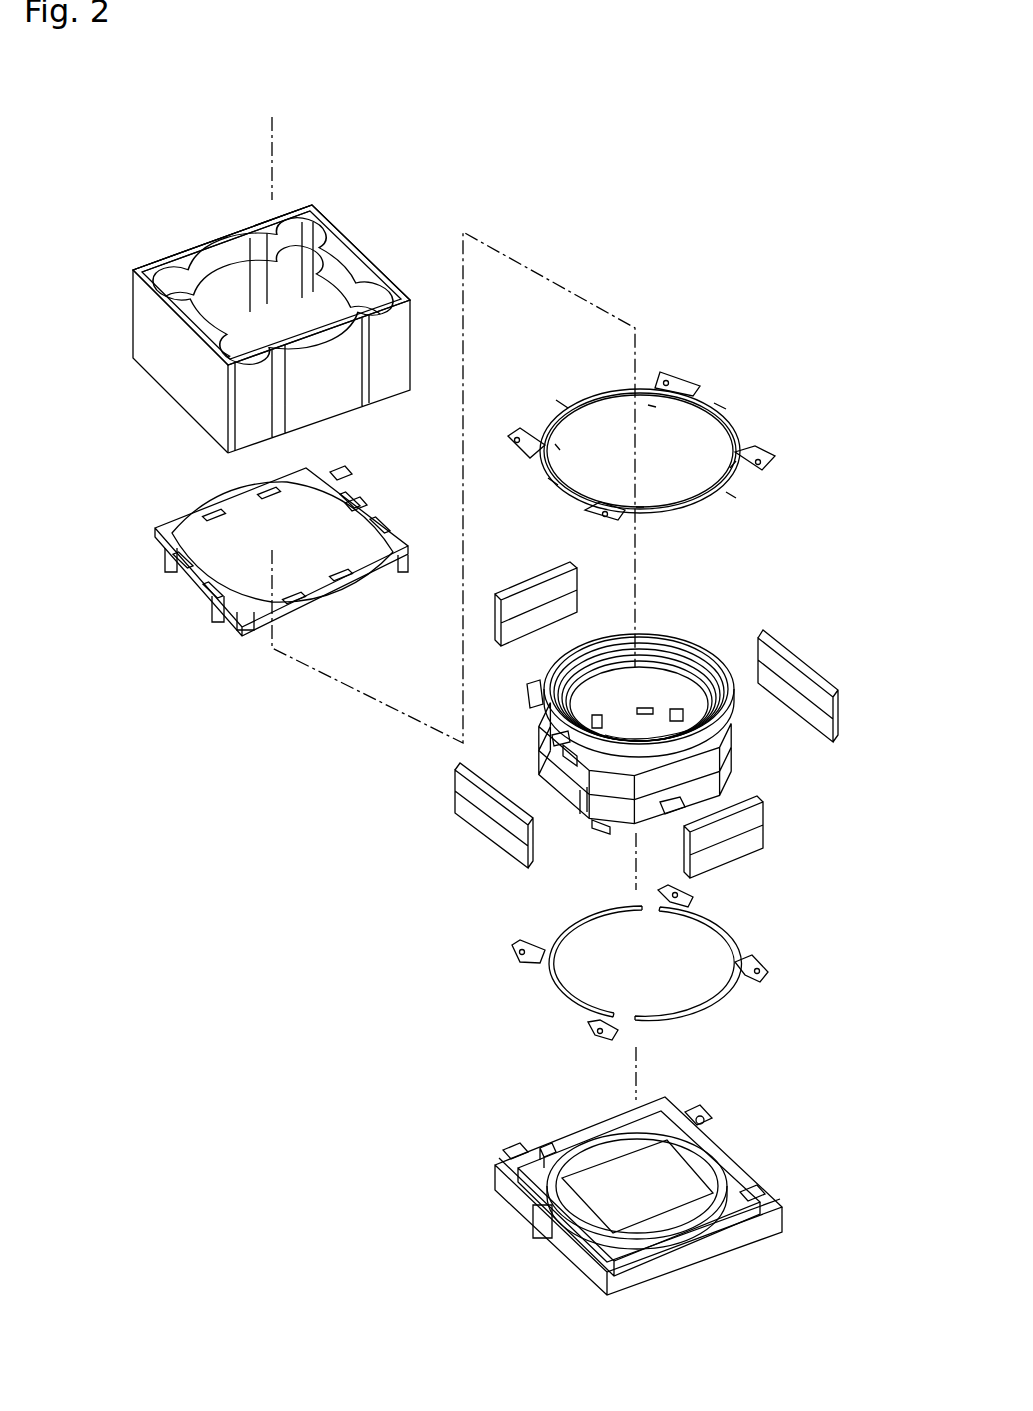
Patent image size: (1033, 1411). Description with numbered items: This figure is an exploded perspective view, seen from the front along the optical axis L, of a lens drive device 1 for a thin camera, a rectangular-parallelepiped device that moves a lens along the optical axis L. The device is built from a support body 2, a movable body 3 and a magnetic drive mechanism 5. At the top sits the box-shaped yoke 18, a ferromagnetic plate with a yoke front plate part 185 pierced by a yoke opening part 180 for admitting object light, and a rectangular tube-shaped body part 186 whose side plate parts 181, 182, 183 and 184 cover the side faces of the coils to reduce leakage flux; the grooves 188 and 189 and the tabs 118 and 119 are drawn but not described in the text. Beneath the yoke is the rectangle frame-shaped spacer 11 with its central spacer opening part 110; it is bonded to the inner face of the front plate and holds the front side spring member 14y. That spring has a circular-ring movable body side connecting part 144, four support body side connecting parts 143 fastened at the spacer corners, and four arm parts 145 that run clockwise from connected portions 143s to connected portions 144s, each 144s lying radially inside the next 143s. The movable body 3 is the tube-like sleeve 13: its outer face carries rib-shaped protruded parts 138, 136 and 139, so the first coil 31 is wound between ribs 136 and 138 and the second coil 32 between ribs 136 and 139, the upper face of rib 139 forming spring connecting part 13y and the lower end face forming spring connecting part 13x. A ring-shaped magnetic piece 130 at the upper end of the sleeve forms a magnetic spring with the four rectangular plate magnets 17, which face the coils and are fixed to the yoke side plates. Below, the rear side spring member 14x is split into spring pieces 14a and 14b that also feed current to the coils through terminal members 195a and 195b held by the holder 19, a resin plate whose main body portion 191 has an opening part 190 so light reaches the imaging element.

The lens drive device 1 is at (155, 160).
The support body 2 is at (421, 743).
The movable body 3 is at (663, 635).
The magnetic drive mechanism 5 is at (828, 782).
The spacer 11 is at (193, 585).
The sleeve 13 is at (700, 646).
The spring connecting part 13x is at (673, 807).
The spring connecting part 13y is at (733, 707).
The spring piece 14a is at (670, 1028).
The spring piece 14b is at (713, 1003).
The rear side spring member 14x is at (773, 1050).
The front side spring member 14y is at (613, 392).
The magnet 17 is at (733, 853).
The yoke 18 is at (128, 347).
The holder 19 is at (492, 1200).
The first coil 31 is at (707, 780).
The second coil 32 is at (723, 750).
The spacer opening part 110 is at (387, 458).
The frame engaging portion 118 is at (355, 508).
The frame engaging portion 119 is at (345, 480).
The magnetic piece 130 is at (563, 740).
The rib-shaped protruded part 136 is at (587, 797).
The rib-shaped protruded part 138 is at (603, 822).
The rib-shaped protruded part 139 is at (573, 755).
The support body side connecting part 143 is at (698, 385).
The connected portion 143s is at (662, 380).
The movable body side connecting part 144 is at (565, 478).
The connected portion 144s is at (610, 442).
The arm part 145 is at (725, 407).
The yoke opening part 180 is at (401, 145).
The side plate part 181 is at (190, 393).
The side plate part 182 is at (240, 432).
The side plate part 183 is at (335, 266).
The side plate part 184 is at (190, 278).
The yoke front plate part 185 is at (205, 243).
The rectangular tube-shaped body part 186 is at (330, 413).
The cover groove 188 is at (328, 243).
The cover groove 189 is at (300, 215).
The opening part 190 is at (620, 1197).
The main body portion 191 is at (640, 1273).
The terminal member 195a is at (550, 1148).
The terminal member 195b is at (693, 1123).
The optical axis L is at (449, 594).